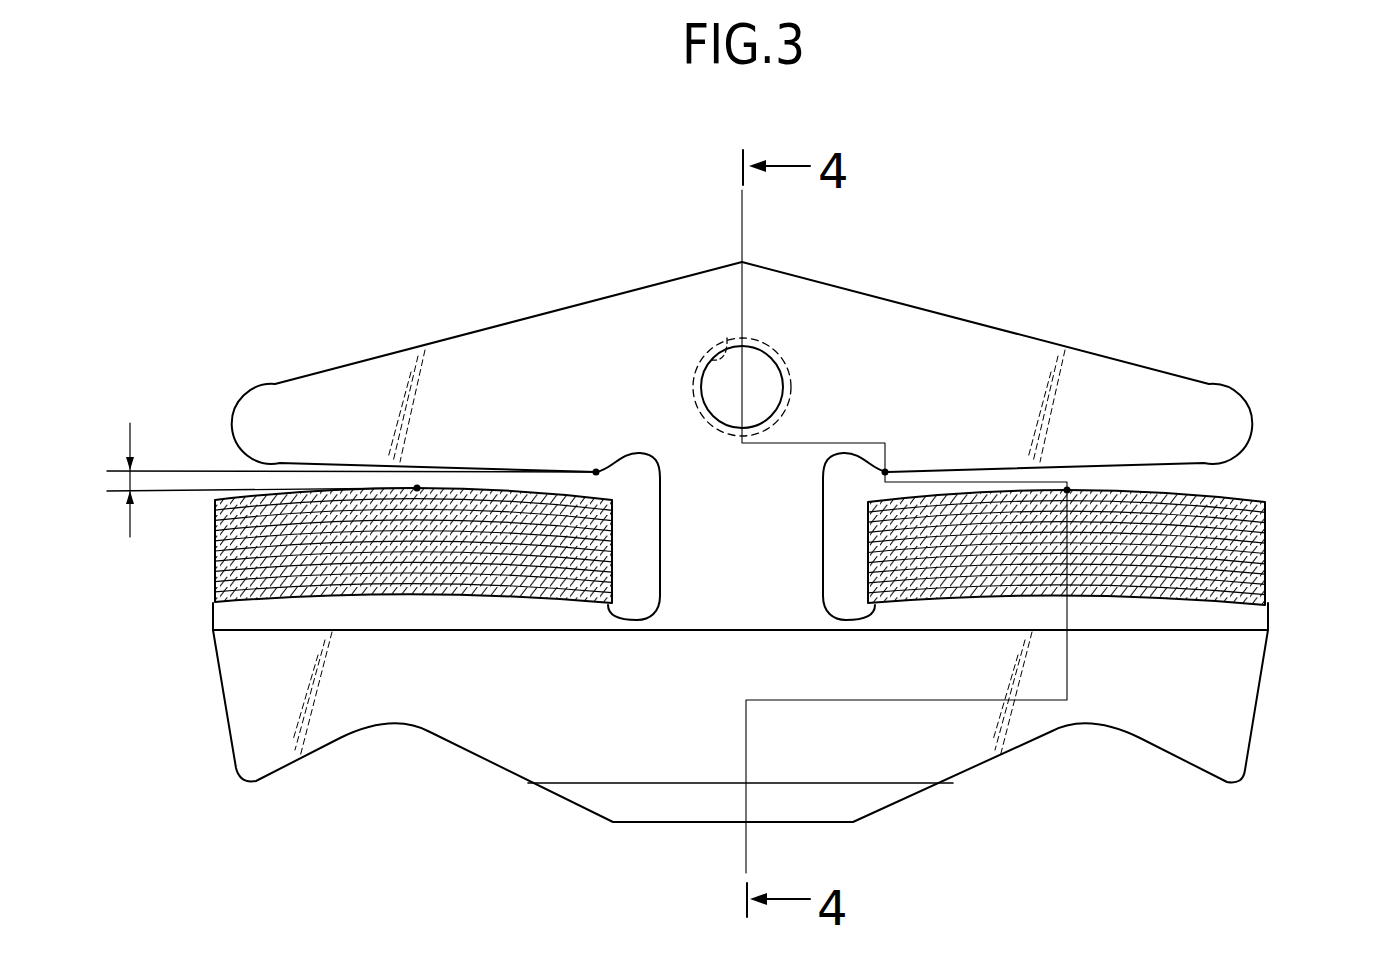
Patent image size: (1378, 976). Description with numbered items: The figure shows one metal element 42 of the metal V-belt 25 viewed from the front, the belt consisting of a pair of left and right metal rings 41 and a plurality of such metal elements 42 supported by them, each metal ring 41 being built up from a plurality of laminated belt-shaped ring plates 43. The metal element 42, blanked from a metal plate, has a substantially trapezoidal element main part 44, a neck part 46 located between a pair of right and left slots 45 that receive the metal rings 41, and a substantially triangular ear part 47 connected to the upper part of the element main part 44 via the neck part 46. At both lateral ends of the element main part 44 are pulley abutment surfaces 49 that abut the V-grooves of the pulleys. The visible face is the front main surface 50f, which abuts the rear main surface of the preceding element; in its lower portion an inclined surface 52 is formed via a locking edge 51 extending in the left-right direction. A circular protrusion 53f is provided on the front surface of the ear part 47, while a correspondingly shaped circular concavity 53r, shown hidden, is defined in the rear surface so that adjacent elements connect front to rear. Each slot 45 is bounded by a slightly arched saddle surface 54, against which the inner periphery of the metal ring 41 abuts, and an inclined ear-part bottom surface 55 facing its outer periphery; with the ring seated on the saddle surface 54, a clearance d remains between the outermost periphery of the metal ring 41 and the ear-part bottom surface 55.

The metal V-belt 25 is at (918, 305).
The metal ring 41 is at (220, 482).
The metal element 42 is at (903, 815).
The ring plate 43 is at (215, 530).
The element main part 44 is at (769, 686).
The slot 45 is at (638, 587).
The neck part 46 is at (660, 512).
The ear part 47 is at (577, 340).
The pulley abutment surface 49 is at (222, 697).
The front main surface 50f is at (783, 533).
The locking edge 51 is at (490, 630).
The inclined surface 52 is at (957, 757).
The protrusion 53f is at (763, 368).
The concavity 53r is at (705, 358).
The saddle surface 54 is at (428, 567).
The ear-part bottom surface 55 is at (425, 466).
The clearance d is at (128, 481).